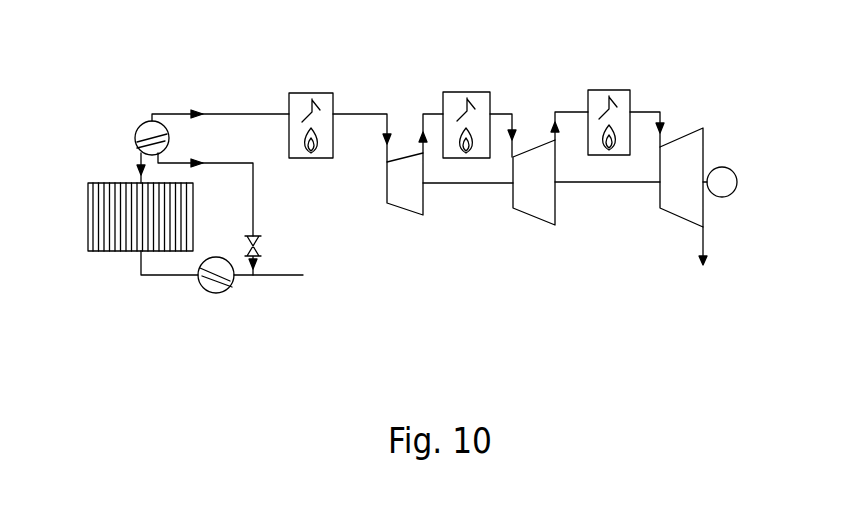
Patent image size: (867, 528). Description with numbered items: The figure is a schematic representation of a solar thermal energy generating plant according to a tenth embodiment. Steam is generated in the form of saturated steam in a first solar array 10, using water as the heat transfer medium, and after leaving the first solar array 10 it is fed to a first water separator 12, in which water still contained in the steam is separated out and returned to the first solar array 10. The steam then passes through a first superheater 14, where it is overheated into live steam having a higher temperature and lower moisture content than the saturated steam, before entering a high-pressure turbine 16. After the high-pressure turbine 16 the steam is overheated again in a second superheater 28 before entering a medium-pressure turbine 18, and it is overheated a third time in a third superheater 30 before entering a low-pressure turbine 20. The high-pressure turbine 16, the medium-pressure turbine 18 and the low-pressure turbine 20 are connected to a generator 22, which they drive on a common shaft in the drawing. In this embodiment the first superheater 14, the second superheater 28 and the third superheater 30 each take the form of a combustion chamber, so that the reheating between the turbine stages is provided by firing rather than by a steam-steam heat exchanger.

The first solar array 10 is at (95, 180).
The first water separator 12 is at (133, 124).
The first superheater 14 is at (307, 92).
The high-pressure turbine 16 is at (398, 210).
The medium-pressure turbine 18 is at (525, 210).
The low-pressure turbine 20 is at (673, 213).
The generator 22 is at (720, 165).
The second superheater 28 is at (460, 92).
The third superheater 30 is at (602, 92).